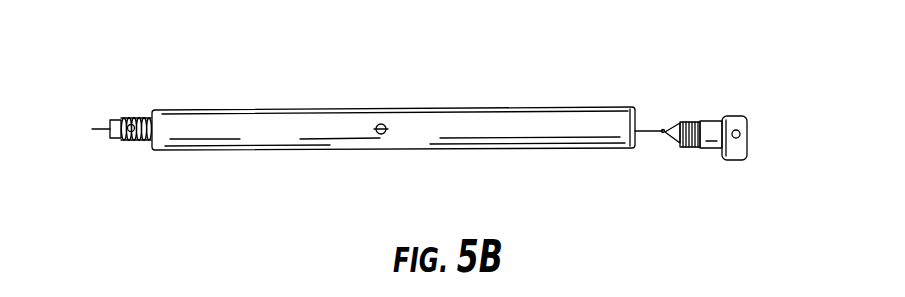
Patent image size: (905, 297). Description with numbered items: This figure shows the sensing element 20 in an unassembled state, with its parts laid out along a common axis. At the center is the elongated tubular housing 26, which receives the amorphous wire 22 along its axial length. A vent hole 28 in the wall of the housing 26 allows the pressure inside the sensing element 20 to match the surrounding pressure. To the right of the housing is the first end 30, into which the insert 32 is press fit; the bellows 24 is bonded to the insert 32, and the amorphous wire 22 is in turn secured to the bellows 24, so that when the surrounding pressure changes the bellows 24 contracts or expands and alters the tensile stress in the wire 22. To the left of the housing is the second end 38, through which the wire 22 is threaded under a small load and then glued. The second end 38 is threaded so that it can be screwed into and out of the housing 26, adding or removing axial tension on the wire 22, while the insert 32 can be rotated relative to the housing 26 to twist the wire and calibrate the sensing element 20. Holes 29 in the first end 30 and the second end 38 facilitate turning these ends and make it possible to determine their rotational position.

The sensing element 20 is at (84, 72).
The amorphous wire 22 is at (102, 128).
The bellows 24 is at (690, 128).
The housing 26 is at (269, 123).
The vent hole 28 is at (381, 135).
The holes 29 is at (133, 124).
The first end 30 is at (636, 128).
The insert 32 is at (728, 120).
The second end 38 is at (139, 148).